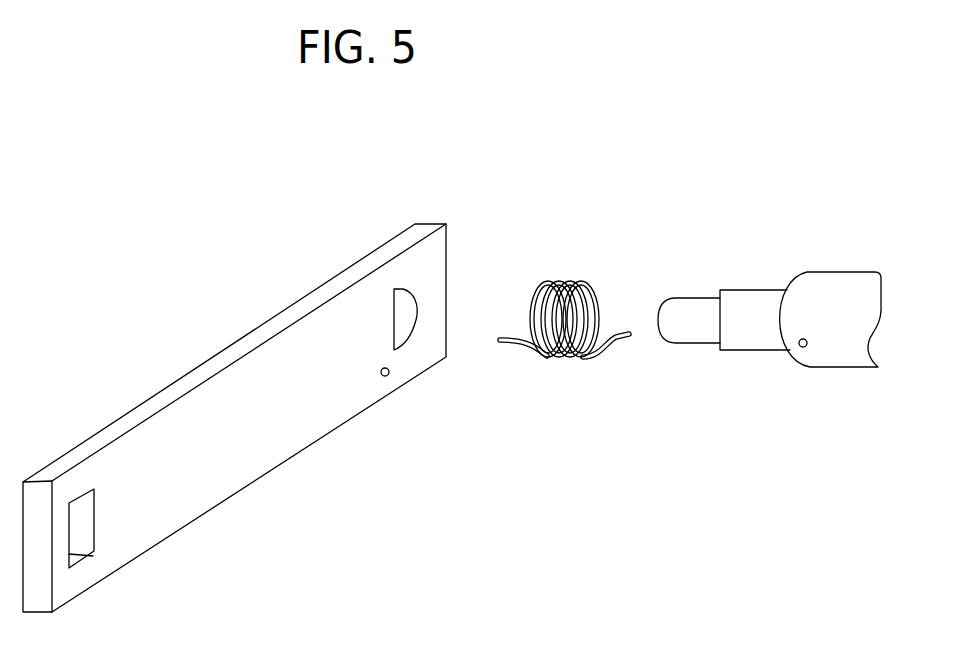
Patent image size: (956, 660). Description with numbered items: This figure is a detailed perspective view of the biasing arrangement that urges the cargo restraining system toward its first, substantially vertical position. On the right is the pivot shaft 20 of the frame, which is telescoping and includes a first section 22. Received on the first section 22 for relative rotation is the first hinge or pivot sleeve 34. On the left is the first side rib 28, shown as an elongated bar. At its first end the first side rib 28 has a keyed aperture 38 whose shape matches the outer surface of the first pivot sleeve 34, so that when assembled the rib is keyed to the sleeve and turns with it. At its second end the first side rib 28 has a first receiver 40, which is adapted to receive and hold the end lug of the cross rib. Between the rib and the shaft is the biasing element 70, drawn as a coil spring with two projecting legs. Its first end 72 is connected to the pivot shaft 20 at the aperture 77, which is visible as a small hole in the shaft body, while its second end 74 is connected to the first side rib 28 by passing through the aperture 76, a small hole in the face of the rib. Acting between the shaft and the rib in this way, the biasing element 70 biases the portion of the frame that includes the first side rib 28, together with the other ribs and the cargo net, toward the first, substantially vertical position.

The pivot shaft 20 is at (833, 285).
The first section 22 is at (682, 300).
The first side rib 28 is at (258, 458).
The first pivot sleeve 34 is at (768, 290).
The keyed aperture 38 is at (407, 288).
The first receiver 40 is at (90, 530).
The biasing element 70 is at (552, 282).
The first end 72 is at (625, 340).
The second end 74 is at (503, 343).
The aperture 76 is at (388, 377).
The aperture 77 is at (803, 347).